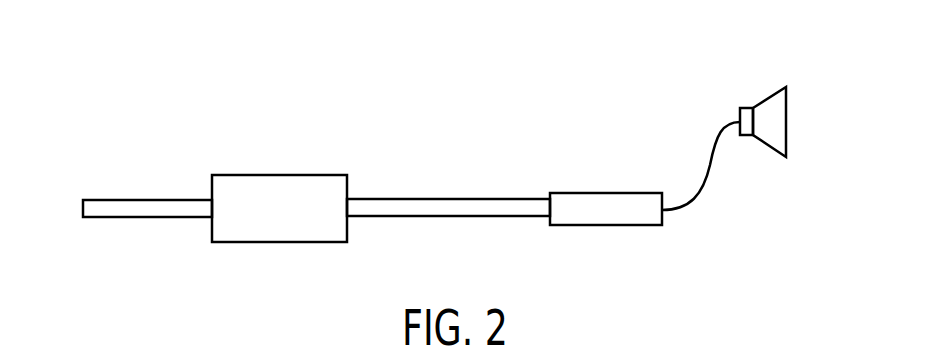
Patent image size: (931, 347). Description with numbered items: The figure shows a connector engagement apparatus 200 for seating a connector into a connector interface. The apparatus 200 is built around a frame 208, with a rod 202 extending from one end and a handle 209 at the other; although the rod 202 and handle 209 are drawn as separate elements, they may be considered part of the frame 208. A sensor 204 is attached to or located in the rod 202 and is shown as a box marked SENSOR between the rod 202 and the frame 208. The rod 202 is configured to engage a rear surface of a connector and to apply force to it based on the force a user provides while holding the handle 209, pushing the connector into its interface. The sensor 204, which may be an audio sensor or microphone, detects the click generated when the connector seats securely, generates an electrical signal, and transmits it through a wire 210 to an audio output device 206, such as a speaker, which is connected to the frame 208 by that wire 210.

The connector engagement apparatus 200 is at (452, 118).
The rod 202 is at (132, 218).
The sensor 204 is at (279, 175).
The audio output device 206 is at (777, 95).
The frame 208 is at (457, 200).
The handle 209 is at (590, 200).
The wire 210 is at (728, 197).